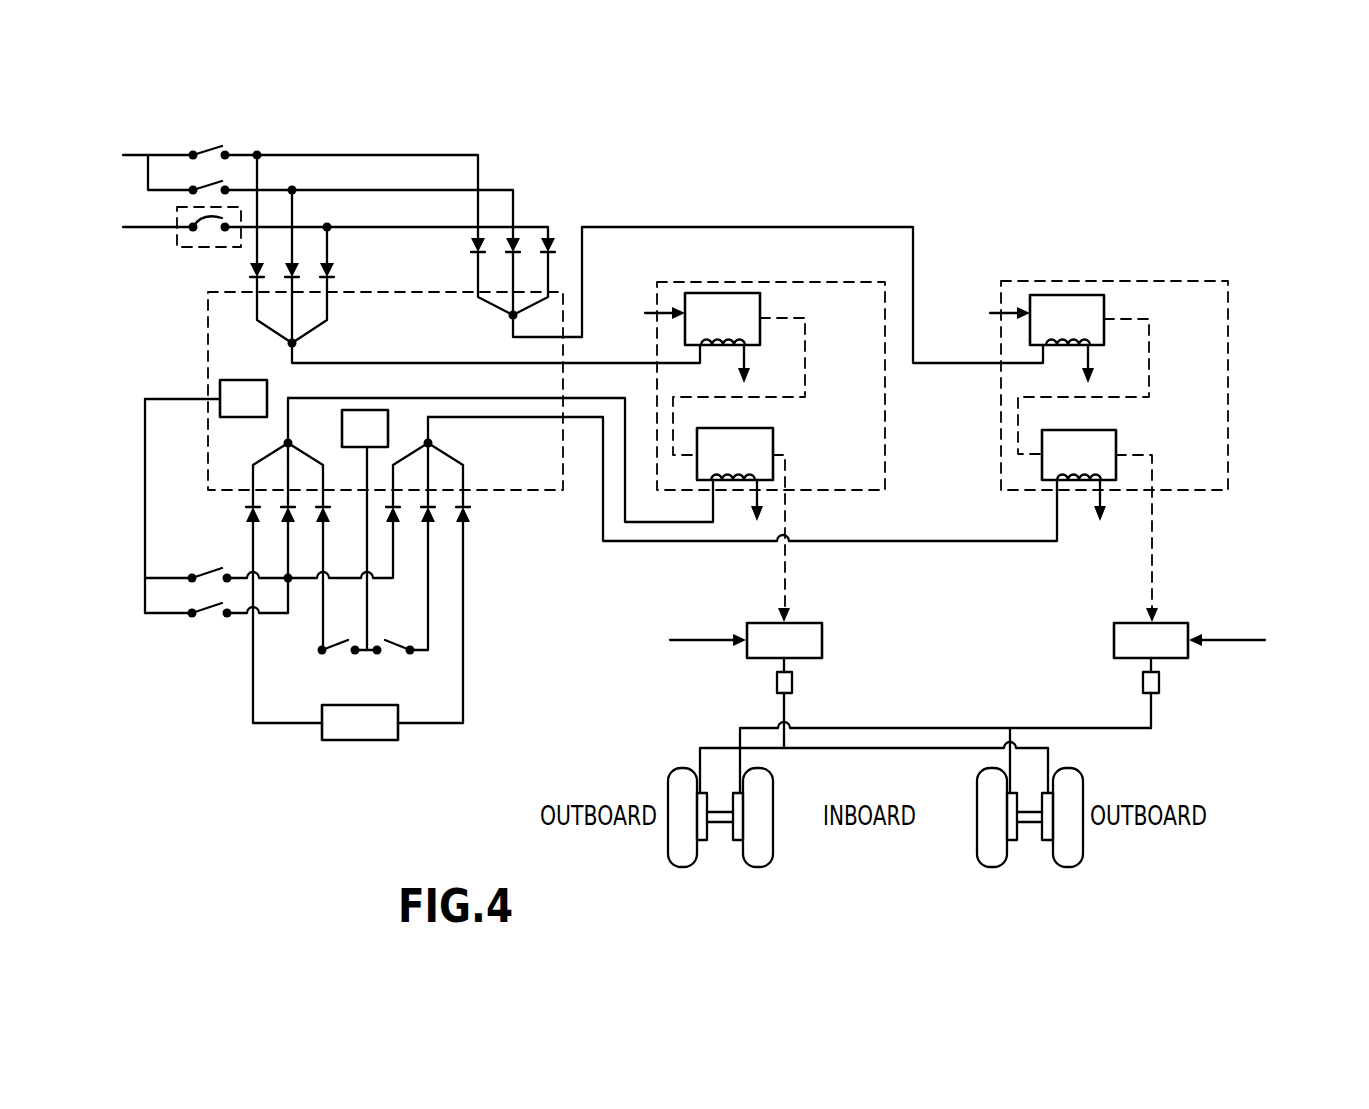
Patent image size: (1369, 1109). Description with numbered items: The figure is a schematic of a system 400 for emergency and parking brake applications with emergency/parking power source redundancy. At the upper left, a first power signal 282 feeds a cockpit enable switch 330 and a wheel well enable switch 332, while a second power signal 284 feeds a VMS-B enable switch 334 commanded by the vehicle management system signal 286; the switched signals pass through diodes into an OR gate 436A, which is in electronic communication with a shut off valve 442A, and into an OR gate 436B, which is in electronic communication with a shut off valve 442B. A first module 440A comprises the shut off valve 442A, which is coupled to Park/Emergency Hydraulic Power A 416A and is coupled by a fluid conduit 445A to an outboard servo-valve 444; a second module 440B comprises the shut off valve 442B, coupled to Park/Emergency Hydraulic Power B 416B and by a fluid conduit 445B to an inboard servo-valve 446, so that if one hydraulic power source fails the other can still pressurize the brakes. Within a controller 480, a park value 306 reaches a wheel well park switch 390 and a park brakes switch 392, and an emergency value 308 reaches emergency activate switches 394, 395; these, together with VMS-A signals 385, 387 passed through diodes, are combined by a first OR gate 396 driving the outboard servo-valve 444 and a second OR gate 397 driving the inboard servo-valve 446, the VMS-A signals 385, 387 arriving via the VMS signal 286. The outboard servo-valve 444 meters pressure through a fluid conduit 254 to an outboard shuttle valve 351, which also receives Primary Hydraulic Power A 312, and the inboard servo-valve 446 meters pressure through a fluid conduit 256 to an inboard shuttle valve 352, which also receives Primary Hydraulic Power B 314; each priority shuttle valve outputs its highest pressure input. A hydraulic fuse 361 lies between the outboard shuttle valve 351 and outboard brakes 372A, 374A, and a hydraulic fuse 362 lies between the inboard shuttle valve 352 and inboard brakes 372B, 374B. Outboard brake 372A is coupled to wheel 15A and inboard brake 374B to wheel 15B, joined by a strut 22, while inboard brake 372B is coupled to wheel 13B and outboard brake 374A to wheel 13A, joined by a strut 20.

The first power signal 282 is at (281, 188).
The second power signal 284 is at (316, 226).
The cockpit enable switch 330 is at (212, 148).
The wheel well enable switch 332 is at (200, 183).
The VMS-B enable switch 334 is at (205, 216).
The OR gate 436A is at (297, 343).
The OR gate 436B is at (512, 316).
The system for emergency and parking applications 400 is at (746, 181).
The first module 440A is at (885, 470).
The shut off valve 442A is at (760, 300).
The Park/Emergency Hydraulic Power A 416A is at (637, 312).
The fluid conduit 445A is at (805, 357).
The outboard servo-valve 444 is at (697, 472).
The fluid conduit 254 is at (785, 565).
The second module 440B is at (1228, 447).
The shut off valve 442B is at (1104, 302).
The Park/Emergency Hydraulic Power B 416B is at (981, 312).
The fluid conduit 445B is at (1149, 357).
The inboard servo-valve 446 is at (1042, 470).
The fluid conduit 256 is at (1152, 505).
The outboard shuttle valve 351 is at (755, 623).
The Primary Hydraulic Power A 312 is at (689, 639).
The hydraulic fuse 361 is at (777, 684).
The inboard shuttle valve 352 is at (1176, 623).
The Primary Hydraulic Power B 314 is at (1247, 639).
The hydraulic fuse 362 is at (1159, 685).
The wheel 15A is at (668, 845).
The outboard brake 372A is at (703, 843).
The strut 22 is at (722, 826).
The inboard brake 374B is at (738, 845).
The wheel 15B is at (773, 848).
The wheel 13B is at (977, 843).
The inboard brake 372B is at (1012, 843).
The strut 20 is at (1030, 826).
The outboard brake 374A is at (1047, 845).
The wheel 13A is at (1083, 848).
The controller 480 is at (550, 497).
The park value 306 is at (429, 496).
The emergency value 308 is at (699, 530).
The first OR gate 396 is at (287, 443).
The second OR gate 397 is at (430, 443).
The wheel well park switch 390 is at (212, 575).
The park brakes switch 392 is at (207, 609).
The emergency activate switch 394 is at (333, 656).
The emergency activate switch 395 is at (395, 655).
The VMS-A signal 385 is at (253, 710).
The VMS-A signal 387 is at (455, 724).
The vehicle management system signal 286 is at (345, 740).